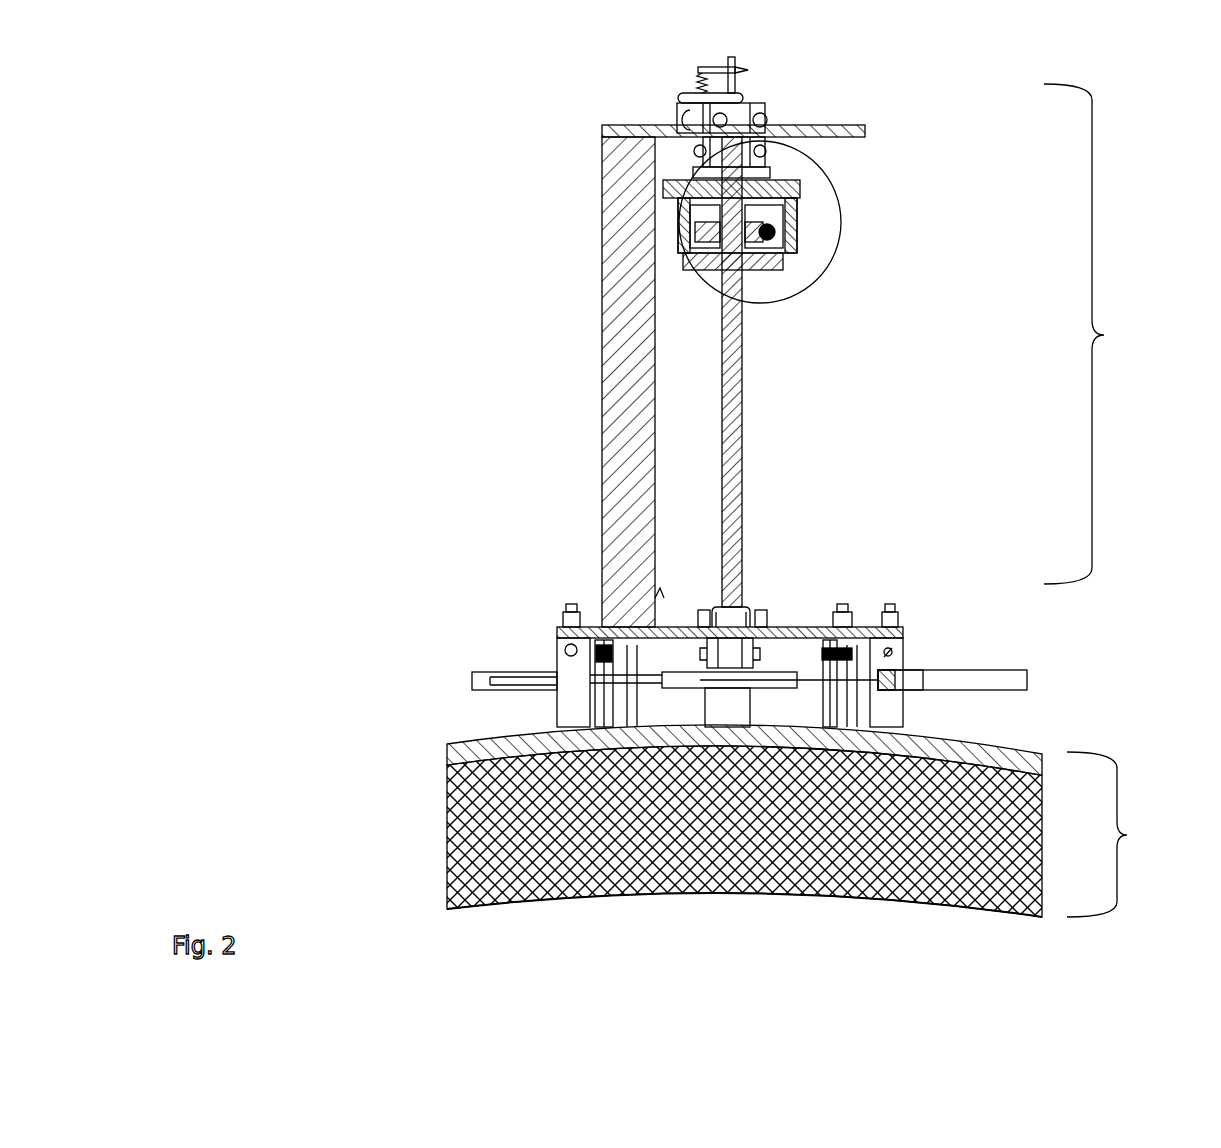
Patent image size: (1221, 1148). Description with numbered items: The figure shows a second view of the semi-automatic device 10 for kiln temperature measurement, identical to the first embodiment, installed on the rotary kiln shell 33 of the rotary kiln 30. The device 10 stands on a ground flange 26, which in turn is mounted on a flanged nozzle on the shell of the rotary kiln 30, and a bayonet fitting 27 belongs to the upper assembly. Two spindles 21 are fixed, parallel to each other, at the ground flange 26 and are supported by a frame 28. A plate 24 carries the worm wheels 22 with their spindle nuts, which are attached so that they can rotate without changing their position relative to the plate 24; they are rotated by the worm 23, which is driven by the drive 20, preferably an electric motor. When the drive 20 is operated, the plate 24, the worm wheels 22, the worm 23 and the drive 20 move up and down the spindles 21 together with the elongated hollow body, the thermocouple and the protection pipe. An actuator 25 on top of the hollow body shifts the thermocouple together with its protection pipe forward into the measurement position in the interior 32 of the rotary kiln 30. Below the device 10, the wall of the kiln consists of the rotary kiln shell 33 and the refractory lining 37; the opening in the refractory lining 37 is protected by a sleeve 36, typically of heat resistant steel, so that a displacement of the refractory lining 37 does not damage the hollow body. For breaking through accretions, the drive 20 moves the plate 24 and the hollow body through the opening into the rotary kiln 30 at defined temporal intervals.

The device 10 is at (1104, 335).
The drive 20 is at (826, 273).
The spindle 21 is at (744, 451).
The worm wheel 22 is at (692, 270).
The worm 23 is at (797, 229).
The plate 24 is at (800, 190).
The actuator 25 is at (686, 118).
The ground flange 26 is at (898, 627).
The bayonet fitting 27 is at (778, 175).
The frame 28 is at (617, 413).
The rotary kiln 30 is at (1127, 835).
The rotary kiln interior 32 is at (744, 841).
The rotary kiln shell 33 is at (462, 742).
The sleeve 36 is at (723, 712).
The refractory lining 37 is at (983, 903).